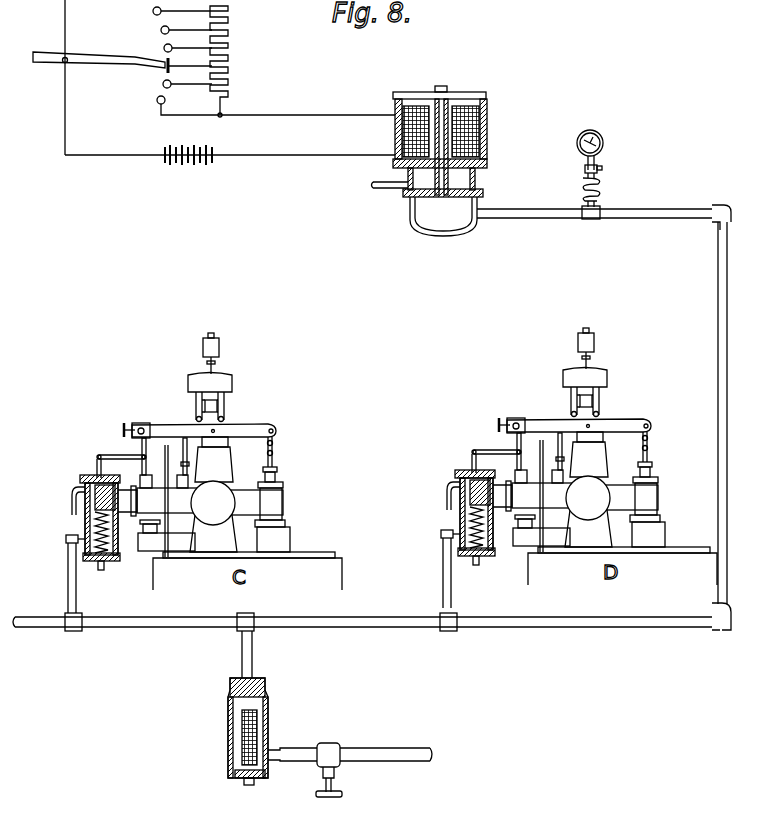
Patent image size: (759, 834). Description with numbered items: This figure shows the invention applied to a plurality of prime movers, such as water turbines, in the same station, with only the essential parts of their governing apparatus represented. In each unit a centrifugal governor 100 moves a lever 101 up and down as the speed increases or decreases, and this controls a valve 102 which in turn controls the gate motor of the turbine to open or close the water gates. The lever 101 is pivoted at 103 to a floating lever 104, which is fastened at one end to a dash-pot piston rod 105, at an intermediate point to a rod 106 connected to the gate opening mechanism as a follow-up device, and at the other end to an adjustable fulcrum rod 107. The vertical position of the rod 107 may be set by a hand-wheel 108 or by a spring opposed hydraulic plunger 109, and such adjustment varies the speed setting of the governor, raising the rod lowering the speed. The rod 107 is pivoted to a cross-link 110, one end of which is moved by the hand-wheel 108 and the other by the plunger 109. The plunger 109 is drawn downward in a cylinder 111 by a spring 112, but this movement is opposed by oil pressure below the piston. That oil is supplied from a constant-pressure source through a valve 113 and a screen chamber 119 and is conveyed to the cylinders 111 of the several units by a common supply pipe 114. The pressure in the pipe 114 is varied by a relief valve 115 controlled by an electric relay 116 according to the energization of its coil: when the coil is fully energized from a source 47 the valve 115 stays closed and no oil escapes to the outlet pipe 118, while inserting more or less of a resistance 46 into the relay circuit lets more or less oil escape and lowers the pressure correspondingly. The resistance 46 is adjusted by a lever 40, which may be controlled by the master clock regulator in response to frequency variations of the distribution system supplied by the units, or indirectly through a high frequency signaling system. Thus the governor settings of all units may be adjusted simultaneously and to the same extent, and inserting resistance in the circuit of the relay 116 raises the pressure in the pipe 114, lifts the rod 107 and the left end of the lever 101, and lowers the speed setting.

The lever 40 is at (121, 65).
The resistance 46 is at (229, 52).
The source 47 is at (190, 163).
The centrifugal governor 100 is at (226, 382).
The lever 101 is at (246, 424).
The valve 102 is at (286, 501).
The pivot 103 is at (150, 431).
The floating lever 104 is at (146, 423).
The dash-pot piston rod 105 is at (189, 461).
The rod 106 is at (167, 466).
The adjustable fulcrum rod 107 is at (141, 447).
The hand-wheel 108 is at (141, 524).
The spring opposed hydraulic plunger 109 is at (107, 493).
The cross-link 110 is at (99, 455).
The cylinder 111 is at (84, 519).
The spring 112 is at (100, 562).
The valve 113 is at (327, 745).
The common supply pipe 114 is at (161, 630).
The relief valve 115 is at (452, 190).
The electric relay 116 is at (488, 117).
The outlet pipe 118 is at (388, 189).
The screen chamber 119 is at (227, 735).